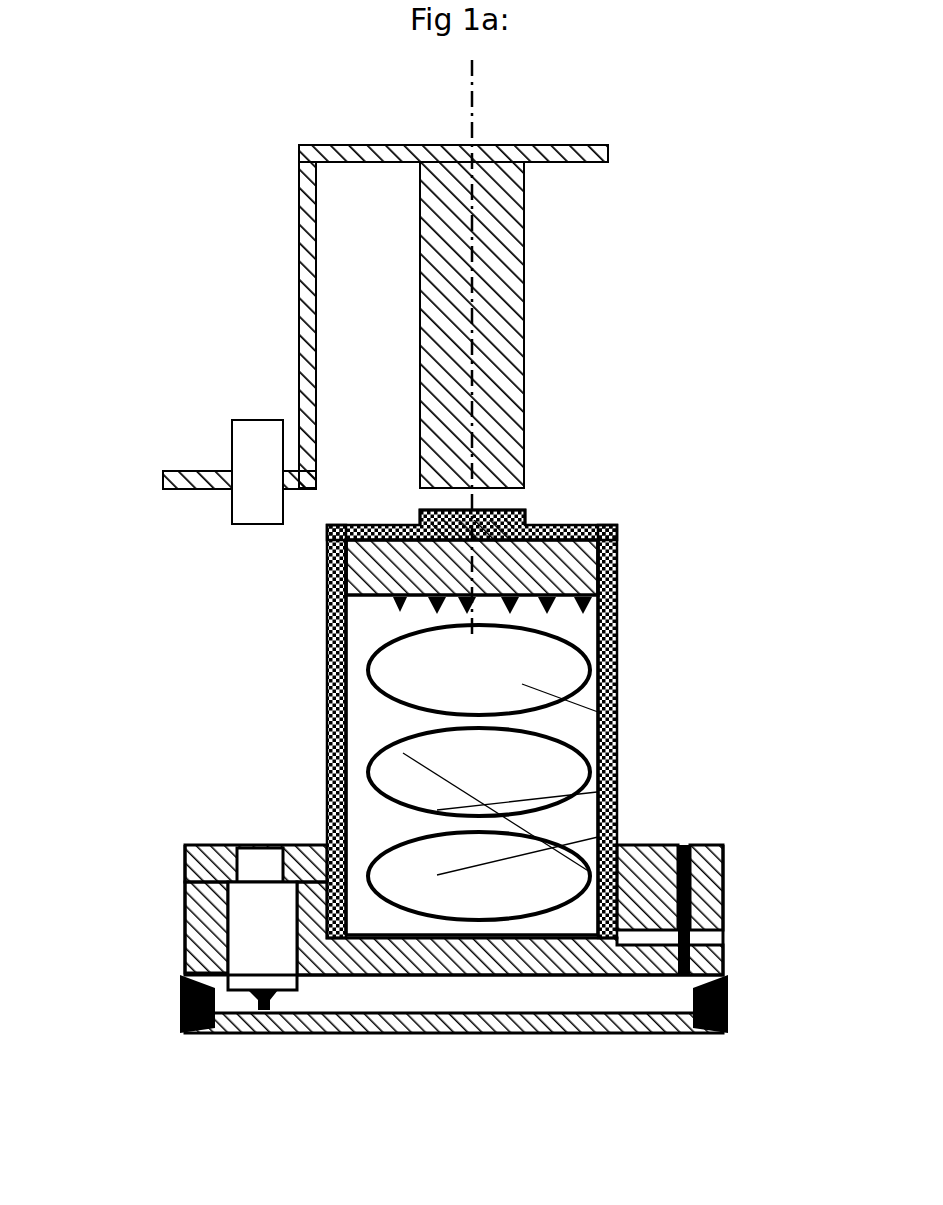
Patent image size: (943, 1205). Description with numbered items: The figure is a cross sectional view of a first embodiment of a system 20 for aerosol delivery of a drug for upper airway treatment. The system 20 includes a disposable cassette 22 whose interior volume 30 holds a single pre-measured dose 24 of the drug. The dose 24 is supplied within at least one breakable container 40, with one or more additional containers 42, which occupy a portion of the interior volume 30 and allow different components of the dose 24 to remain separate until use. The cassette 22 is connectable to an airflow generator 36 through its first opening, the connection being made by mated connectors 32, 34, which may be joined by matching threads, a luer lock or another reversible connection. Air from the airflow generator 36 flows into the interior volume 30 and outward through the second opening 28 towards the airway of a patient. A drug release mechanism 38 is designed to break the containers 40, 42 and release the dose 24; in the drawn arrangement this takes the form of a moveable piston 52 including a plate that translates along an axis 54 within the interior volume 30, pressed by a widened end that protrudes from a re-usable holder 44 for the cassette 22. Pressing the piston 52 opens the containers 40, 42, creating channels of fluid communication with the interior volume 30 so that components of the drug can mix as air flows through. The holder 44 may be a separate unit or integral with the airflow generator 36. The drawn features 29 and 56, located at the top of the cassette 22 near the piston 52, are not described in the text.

The system 20 is at (457, 638).
The disposable cassette 22 is at (503, 562).
The single pre-measured dose 24 is at (402, 683).
The second opening 28 is at (680, 842).
The boss 29 is at (528, 515).
The interior volume 30 is at (367, 615).
The connector 32 is at (265, 860).
The connector 34 is at (178, 472).
The airflow generator 36 is at (246, 452).
The drug release mechanism 38 is at (612, 522).
The breakable container 40 is at (598, 712).
The additional breakable container 42 is at (437, 875).
The re-usable holder 44 is at (299, 196).
The moveable piston 52 is at (330, 583).
The axis 54 is at (472, 268).
The teeth 56 is at (575, 612).